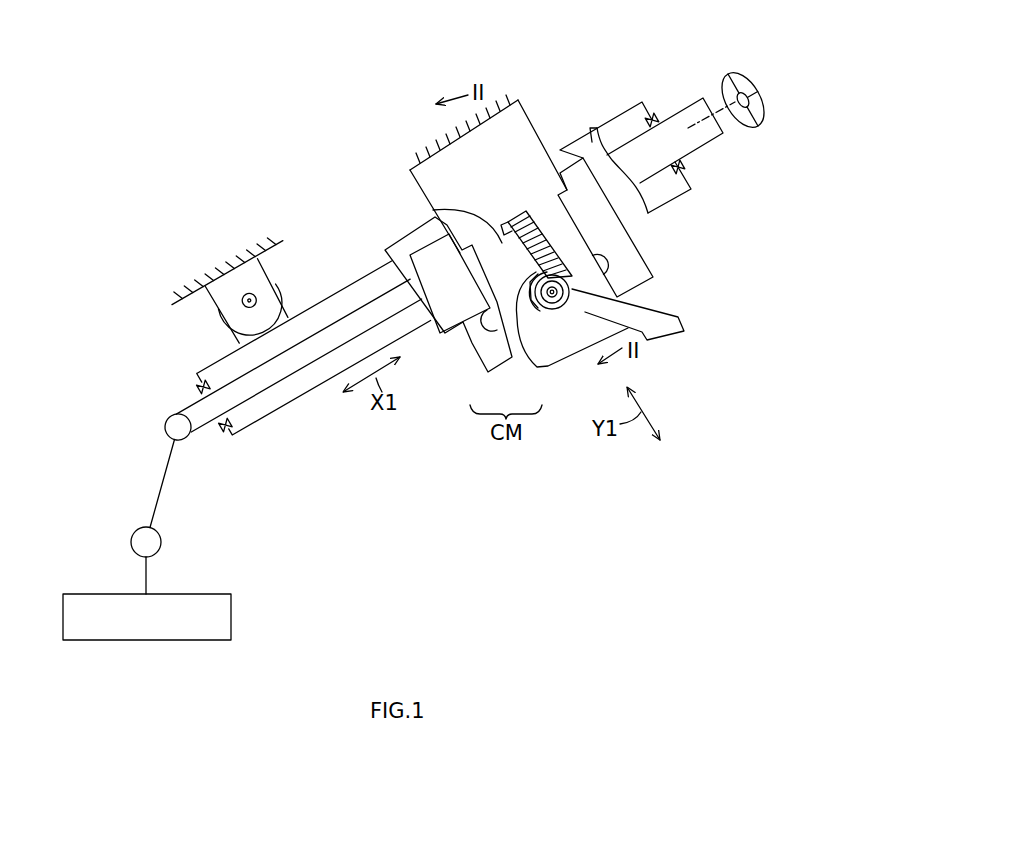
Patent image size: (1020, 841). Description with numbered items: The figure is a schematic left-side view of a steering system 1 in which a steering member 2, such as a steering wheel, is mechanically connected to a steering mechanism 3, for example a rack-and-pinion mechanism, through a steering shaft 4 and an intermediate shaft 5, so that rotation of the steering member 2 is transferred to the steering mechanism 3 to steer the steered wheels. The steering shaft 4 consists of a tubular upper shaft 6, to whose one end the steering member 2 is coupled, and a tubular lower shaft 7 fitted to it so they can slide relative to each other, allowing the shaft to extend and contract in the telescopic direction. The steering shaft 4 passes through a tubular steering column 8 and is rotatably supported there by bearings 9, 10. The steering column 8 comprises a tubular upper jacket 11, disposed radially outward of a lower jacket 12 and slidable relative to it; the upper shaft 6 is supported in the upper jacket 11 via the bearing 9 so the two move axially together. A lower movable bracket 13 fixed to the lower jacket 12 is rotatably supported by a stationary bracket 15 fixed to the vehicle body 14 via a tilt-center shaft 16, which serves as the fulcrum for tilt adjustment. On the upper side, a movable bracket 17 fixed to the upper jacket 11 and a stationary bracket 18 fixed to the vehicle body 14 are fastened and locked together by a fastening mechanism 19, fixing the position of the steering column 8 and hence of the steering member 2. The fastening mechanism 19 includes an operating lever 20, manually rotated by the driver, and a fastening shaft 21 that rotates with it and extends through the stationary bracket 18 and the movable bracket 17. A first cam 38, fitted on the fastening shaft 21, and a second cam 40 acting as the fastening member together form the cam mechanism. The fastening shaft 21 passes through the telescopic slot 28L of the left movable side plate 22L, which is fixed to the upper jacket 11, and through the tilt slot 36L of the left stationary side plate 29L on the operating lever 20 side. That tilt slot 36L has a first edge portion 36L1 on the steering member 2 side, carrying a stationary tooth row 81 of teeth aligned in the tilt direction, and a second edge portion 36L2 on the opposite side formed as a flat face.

The steering system 1 is at (242, 170).
The steering member 2 is at (735, 72).
The steering mechanism 3 is at (231, 617).
The steering shaft 4 is at (668, 113).
The intermediate shaft 5 is at (160, 493).
The upper shaft 6 is at (713, 141).
The lower shaft 7 is at (303, 358).
The steering column 8 is at (672, 203).
The bearing 9 is at (684, 168).
The bearing 10 is at (222, 431).
The upper jacket 11 is at (592, 125).
The lower jacket 12 is at (355, 282).
The movable bracket 13 is at (243, 330).
The vehicle body 14 is at (185, 290).
The stationary bracket 15 is at (216, 305).
The tilt-center shaft 16 is at (254, 300).
The movable bracket 17 is at (652, 268).
The stationary bracket 18 is at (408, 179).
The fastening mechanism 19 is at (583, 332).
The operating lever 20 is at (640, 305).
The fastening shaft 21 is at (551, 312).
The movable side plate 22L is at (463, 327).
The telescopic slot 28L is at (488, 318).
The stationary side plate 29L is at (527, 127).
The tilt slot 36L is at (507, 224).
The first edge portion 36L1 is at (527, 220).
The second edge portion 36L2 is at (432, 210).
The first cam 38 is at (530, 358).
The second cam 40 is at (513, 357).
The stationary tooth row 81 is at (543, 224).